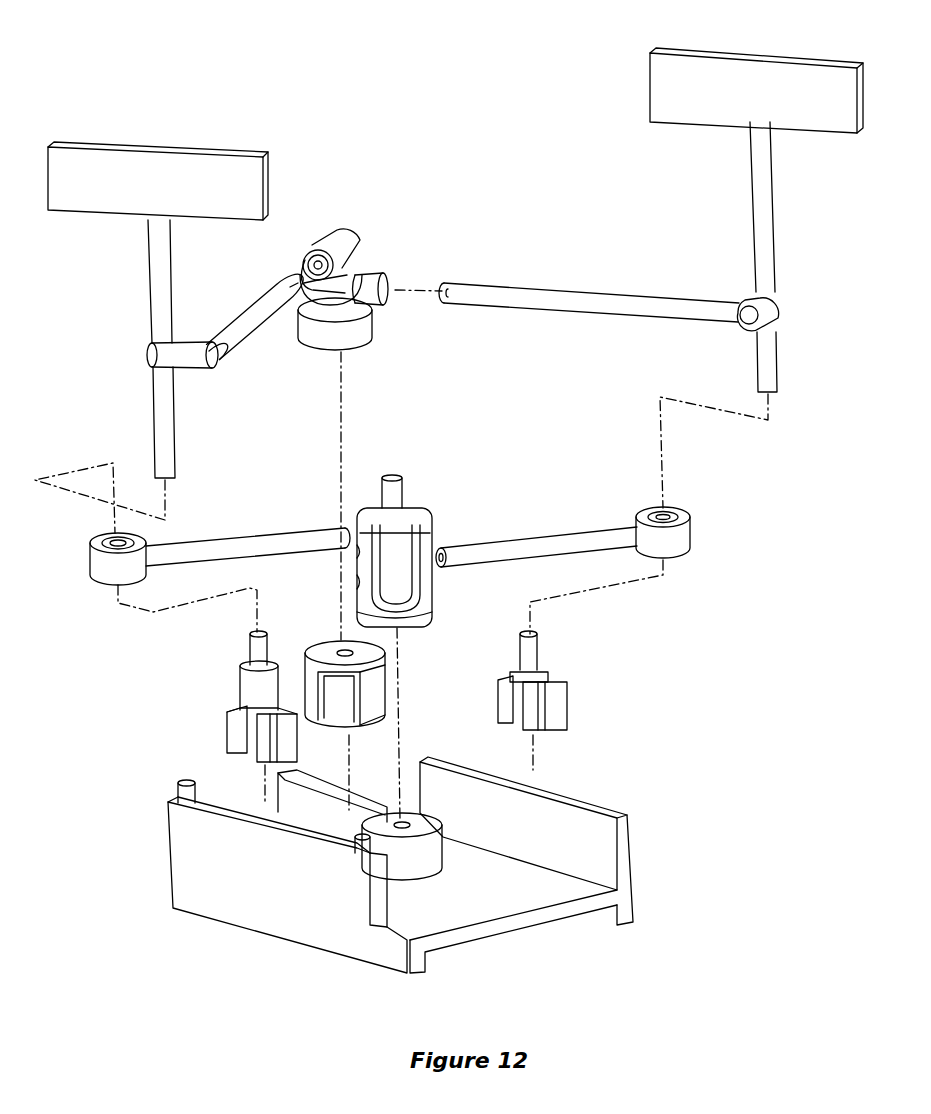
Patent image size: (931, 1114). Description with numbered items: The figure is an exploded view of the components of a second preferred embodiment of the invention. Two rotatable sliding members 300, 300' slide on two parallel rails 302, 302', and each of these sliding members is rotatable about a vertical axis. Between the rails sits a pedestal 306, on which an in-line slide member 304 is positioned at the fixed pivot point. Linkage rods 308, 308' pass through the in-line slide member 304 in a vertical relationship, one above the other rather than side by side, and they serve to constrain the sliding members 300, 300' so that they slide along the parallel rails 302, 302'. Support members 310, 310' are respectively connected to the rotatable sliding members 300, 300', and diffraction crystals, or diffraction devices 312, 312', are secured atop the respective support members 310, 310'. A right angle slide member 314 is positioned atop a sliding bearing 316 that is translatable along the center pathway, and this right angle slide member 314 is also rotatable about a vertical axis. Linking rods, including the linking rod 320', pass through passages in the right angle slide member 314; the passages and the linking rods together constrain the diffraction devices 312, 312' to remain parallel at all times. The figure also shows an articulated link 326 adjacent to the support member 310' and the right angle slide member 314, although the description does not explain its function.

The rotatable sliding member 300 is at (236, 696).
The rotatable sliding member 300' is at (558, 680).
The parallel rail 302 is at (392, 871).
The parallel rail 302' is at (526, 838).
The in-line slide member 304 is at (390, 474).
The pedestal 306 is at (440, 868).
The linkage rod 308 is at (220, 537).
The linkage rod 308' is at (563, 526).
The support member 310 is at (791, 257).
The support member 310' is at (198, 349).
The diffraction device 312 is at (756, 74).
The diffraction device 312' is at (173, 167).
The right angle slide member 314 is at (355, 335).
The sliding bearing 316 is at (388, 677).
The linking rod 320' is at (589, 325).
The articulated link 326 is at (243, 338).